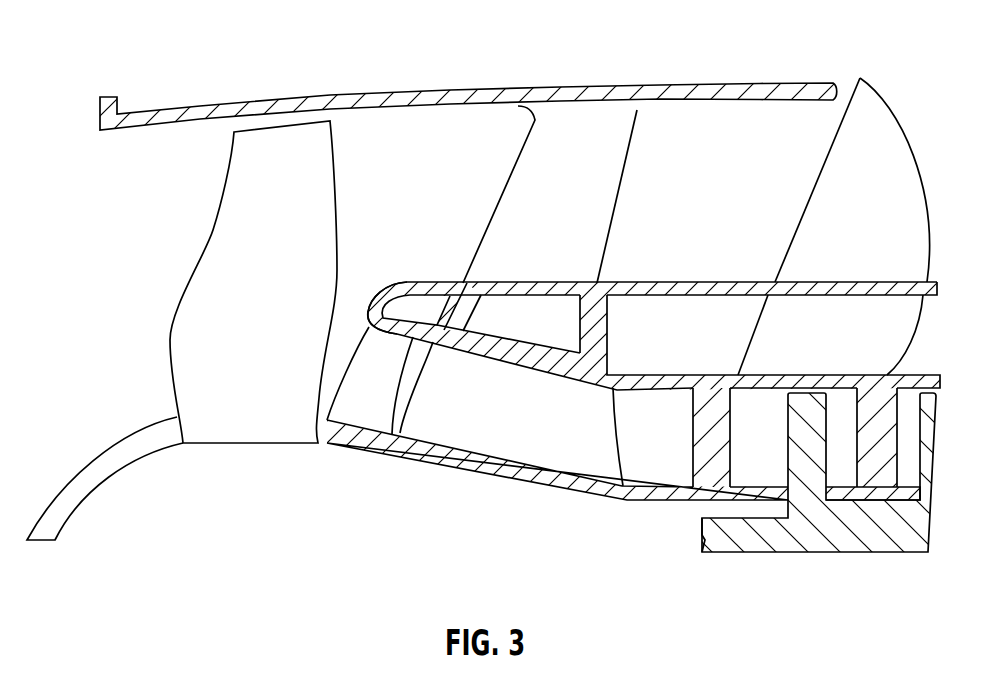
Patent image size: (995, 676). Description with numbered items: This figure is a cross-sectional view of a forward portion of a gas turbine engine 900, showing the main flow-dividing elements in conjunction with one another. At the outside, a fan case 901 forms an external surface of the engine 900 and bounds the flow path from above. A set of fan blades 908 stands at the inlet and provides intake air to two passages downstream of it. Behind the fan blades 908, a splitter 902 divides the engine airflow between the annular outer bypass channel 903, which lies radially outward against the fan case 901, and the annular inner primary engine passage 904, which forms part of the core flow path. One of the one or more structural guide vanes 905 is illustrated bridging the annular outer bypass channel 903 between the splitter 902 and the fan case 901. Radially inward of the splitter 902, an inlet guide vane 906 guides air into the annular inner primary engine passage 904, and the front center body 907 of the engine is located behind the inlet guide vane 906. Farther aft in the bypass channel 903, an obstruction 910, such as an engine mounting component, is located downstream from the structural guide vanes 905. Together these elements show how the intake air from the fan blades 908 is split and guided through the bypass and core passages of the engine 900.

The engine 900 is at (104, 48).
The fan case 901 is at (497, 86).
The splitter 902 is at (406, 289).
The annular outer bypass channel 903 is at (717, 257).
The annular inner primary engine passage 904 is at (679, 448).
The structural guide vane 905 is at (581, 213).
The inlet guide vane 906 is at (361, 406).
The front center body 907 is at (537, 423).
The fan blades 908 is at (277, 327).
The obstruction 910 is at (887, 225).